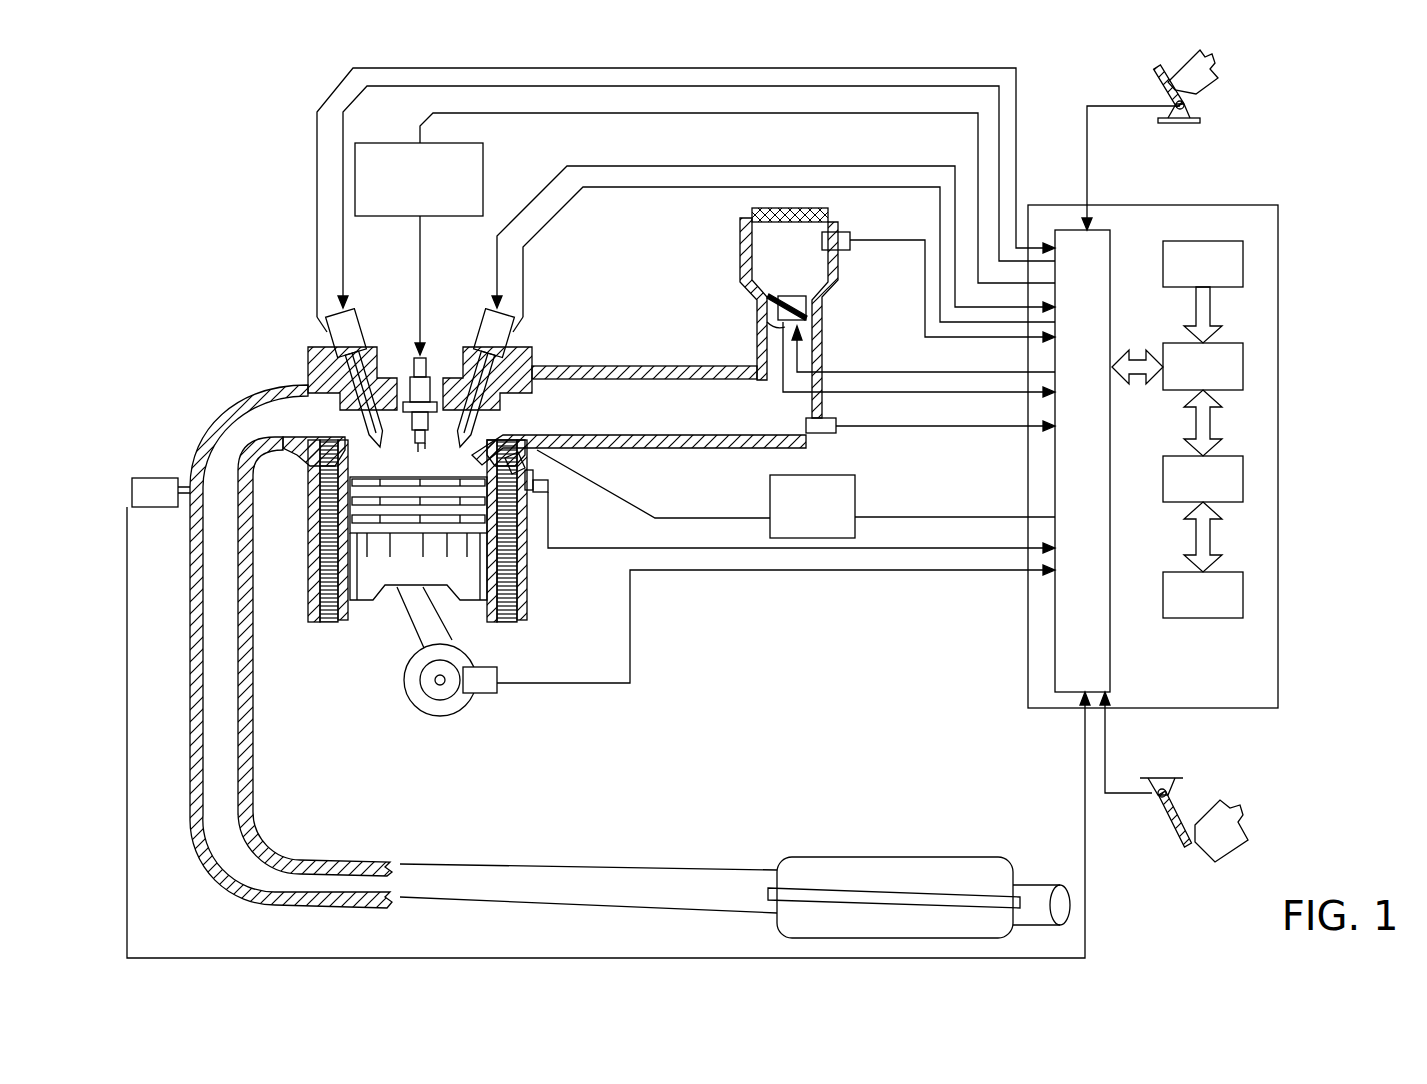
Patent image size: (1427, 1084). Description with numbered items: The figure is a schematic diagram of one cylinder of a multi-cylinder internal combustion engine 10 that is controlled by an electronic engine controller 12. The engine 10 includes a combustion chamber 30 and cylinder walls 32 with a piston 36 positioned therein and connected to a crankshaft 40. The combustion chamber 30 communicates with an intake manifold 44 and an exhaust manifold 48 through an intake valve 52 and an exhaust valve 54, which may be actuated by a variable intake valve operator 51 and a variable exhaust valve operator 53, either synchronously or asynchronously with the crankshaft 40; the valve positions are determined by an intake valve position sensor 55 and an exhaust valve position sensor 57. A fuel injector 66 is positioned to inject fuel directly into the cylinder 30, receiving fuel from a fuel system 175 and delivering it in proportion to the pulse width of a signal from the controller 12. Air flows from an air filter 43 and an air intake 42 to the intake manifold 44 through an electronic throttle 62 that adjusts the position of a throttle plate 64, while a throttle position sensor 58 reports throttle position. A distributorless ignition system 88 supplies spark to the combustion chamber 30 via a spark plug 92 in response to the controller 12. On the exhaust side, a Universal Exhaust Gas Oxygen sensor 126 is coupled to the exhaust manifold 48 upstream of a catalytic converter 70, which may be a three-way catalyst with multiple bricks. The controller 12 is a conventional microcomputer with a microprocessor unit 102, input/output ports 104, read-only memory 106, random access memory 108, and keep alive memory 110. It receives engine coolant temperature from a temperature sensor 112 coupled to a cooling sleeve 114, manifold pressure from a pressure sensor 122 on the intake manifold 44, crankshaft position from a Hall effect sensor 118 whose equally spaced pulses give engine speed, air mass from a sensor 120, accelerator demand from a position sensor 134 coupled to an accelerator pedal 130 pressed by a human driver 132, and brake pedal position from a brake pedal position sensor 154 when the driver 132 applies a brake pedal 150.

The internal combustion engine 10 is at (232, 295).
The electronic engine controller 12 is at (1278, 205).
The combustion chamber 30 is at (330, 560).
The cylinder walls 32 is at (358, 610).
The piston 36 is at (400, 567).
The crankshaft 40 is at (428, 708).
The air intake 42 is at (777, 271).
The air filter 43 is at (750, 207).
The intake manifold 44 is at (602, 420).
The exhaust manifold 48 is at (262, 429).
The variable intake valve operator 51 is at (483, 311).
The intake valve 52 is at (463, 421).
The variable exhaust valve operator 53 is at (354, 311).
The exhaust valve 54 is at (313, 388).
The intake valve position sensor 55 is at (508, 331).
The exhaust valve position sensor 57 is at (331, 331).
The throttle position sensor 58 is at (770, 325).
The electronic throttle 62 is at (810, 302).
The throttle plate 64 is at (775, 306).
The fuel injector 66 is at (535, 463).
The catalytic converter 70 is at (823, 857).
The distributorless ignition system 88 is at (370, 145).
The spark plug 92 is at (423, 352).
The microprocessor unit 102 is at (1243, 362).
The input/output ports 104 is at (1117, 238).
The read-only memory 106 is at (1243, 262).
The random access memory 108 is at (1243, 474).
The keep alive memory 110 is at (1243, 587).
The temperature sensor 112 is at (547, 493).
The cooling sleeve 114 is at (523, 572).
The Hall effect sensor 118 is at (494, 666).
The air mass sensor 120 is at (846, 232).
The pressure sensor 122 is at (832, 434).
The Universal Exhaust Gas Oxygen sensor 126 is at (135, 480).
The accelerator pedal 130 is at (1162, 88).
The human driver 132 is at (1208, 63).
The position sensor 134 is at (1192, 106).
The brake pedal 150 is at (1185, 845).
The brake pedal position sensor 154 is at (1150, 788).
The fuel system 175 is at (795, 521).